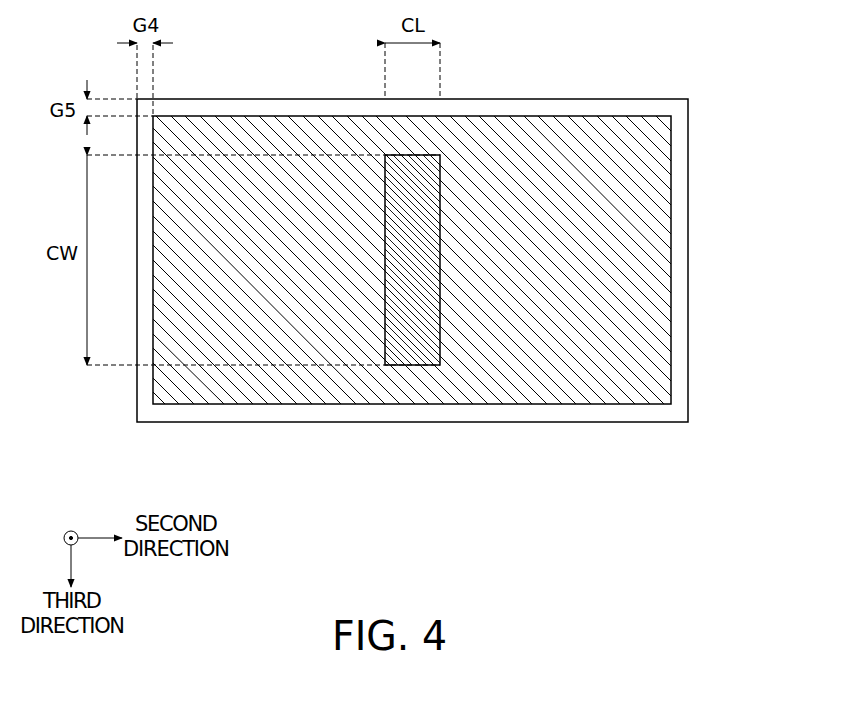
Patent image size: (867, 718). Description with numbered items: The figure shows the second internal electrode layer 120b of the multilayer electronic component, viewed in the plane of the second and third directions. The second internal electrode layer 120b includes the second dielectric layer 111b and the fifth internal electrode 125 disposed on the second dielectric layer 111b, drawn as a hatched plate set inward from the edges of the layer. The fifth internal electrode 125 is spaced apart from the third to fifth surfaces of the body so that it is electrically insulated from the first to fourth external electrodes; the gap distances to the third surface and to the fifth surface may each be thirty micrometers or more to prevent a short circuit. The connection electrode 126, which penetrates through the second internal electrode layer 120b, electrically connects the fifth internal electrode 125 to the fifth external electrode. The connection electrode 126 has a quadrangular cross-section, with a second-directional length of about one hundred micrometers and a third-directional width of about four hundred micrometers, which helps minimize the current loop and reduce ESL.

The second dielectric layer 111b is at (580, 108).
The second internal electrode layer 120b is at (506, 439).
The fifth internal electrode 125 is at (645, 210).
The connection electrode 126 is at (412, 358).